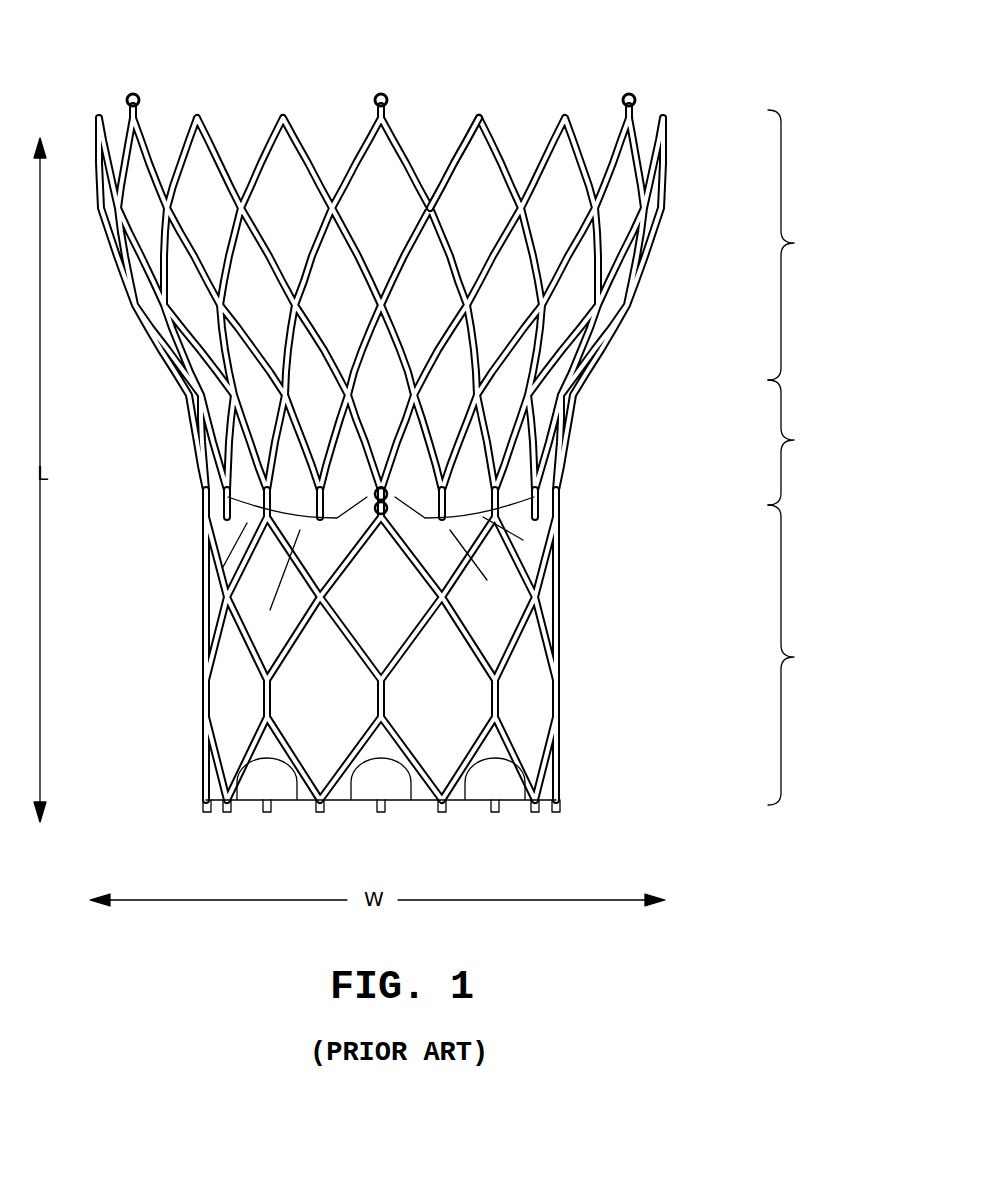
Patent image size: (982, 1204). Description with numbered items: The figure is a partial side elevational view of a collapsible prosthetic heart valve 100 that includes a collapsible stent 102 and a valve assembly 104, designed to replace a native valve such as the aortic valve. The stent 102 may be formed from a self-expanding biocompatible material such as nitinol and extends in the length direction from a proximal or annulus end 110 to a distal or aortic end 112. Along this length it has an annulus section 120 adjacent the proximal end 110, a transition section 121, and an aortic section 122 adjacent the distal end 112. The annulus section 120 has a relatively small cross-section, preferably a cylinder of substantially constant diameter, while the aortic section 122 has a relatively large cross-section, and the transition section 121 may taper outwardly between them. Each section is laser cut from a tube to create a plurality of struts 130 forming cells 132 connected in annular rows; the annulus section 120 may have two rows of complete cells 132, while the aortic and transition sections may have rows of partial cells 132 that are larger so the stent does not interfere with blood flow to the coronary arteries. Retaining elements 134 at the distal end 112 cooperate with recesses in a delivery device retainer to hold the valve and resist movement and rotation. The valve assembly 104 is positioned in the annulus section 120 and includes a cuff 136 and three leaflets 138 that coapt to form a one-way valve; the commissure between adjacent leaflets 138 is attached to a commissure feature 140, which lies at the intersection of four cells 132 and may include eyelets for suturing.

The collapsible prosthetic heart valve 100 is at (425, 441).
The collapsible stent 102 is at (623, 228).
The valve assembly 104 is at (518, 597).
The proximal or annulus end 110 is at (424, 834).
The distal or aortic end 112 is at (428, 55).
The annulus section 120 is at (804, 655).
The transition section 121 is at (804, 442).
The aortic section 122 is at (803, 245).
The struts 130 is at (657, 116).
The cells 132 is at (477, 177).
The retaining elements 134 is at (138, 92).
The cuff 136 is at (268, 812).
The leaflets 138 is at (233, 516).
The commissure feature 140 is at (372, 492).